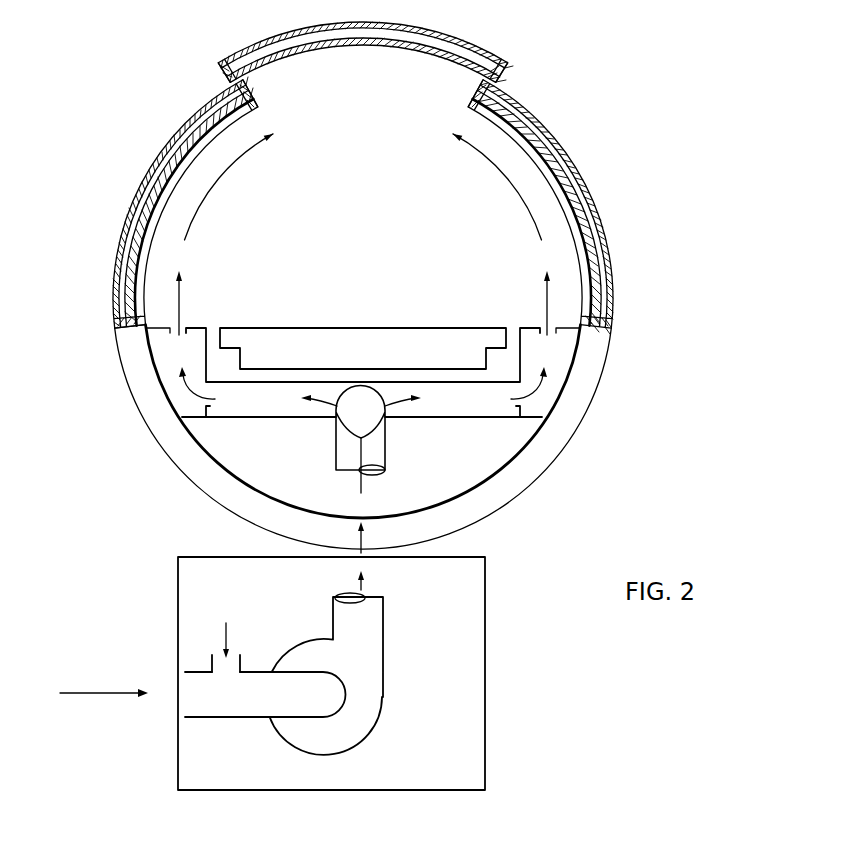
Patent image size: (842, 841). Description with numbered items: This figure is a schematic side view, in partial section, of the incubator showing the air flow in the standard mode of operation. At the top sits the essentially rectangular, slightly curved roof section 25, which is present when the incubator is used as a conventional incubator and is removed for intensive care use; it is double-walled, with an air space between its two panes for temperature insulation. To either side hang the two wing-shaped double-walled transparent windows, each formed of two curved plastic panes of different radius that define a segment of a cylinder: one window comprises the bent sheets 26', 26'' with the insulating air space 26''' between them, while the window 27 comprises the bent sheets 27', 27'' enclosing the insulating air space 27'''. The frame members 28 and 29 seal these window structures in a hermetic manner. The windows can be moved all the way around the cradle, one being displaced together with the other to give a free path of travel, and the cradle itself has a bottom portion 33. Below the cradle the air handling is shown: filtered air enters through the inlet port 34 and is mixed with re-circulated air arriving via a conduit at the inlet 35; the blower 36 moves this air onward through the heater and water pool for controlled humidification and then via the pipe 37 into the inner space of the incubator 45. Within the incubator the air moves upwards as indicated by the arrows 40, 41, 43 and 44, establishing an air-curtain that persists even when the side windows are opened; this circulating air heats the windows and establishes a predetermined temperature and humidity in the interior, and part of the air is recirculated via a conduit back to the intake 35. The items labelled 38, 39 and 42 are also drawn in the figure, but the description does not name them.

The roof section 25 is at (468, 42).
The bent sheet 26' is at (185, 204).
The bent sheet 26'' is at (154, 207).
The insulating air space 26''' is at (138, 202).
The window 27 is at (546, 204).
The bent sheet 27' is at (569, 208).
The bent sheet 27'' is at (578, 215).
The insulating air space 27''' is at (639, 260).
The frame member 28 is at (258, 93).
The frame member 29 is at (504, 98).
The bottom portion 33 is at (482, 497).
The inlet port 34 is at (190, 700).
The inlet 35 is at (222, 660).
The blower 36 is at (357, 730).
The pipe 37 is at (378, 447).
The lower shell outer wall 38 is at (228, 457).
The left housing passage 39 is at (200, 398).
The arrow 40 is at (178, 313).
The arrow 41 is at (213, 182).
The right housing passage 42 is at (530, 398).
The arrow 43 is at (553, 301).
The arrow 44 is at (524, 202).
The inner space of the incubator 45 is at (370, 338).